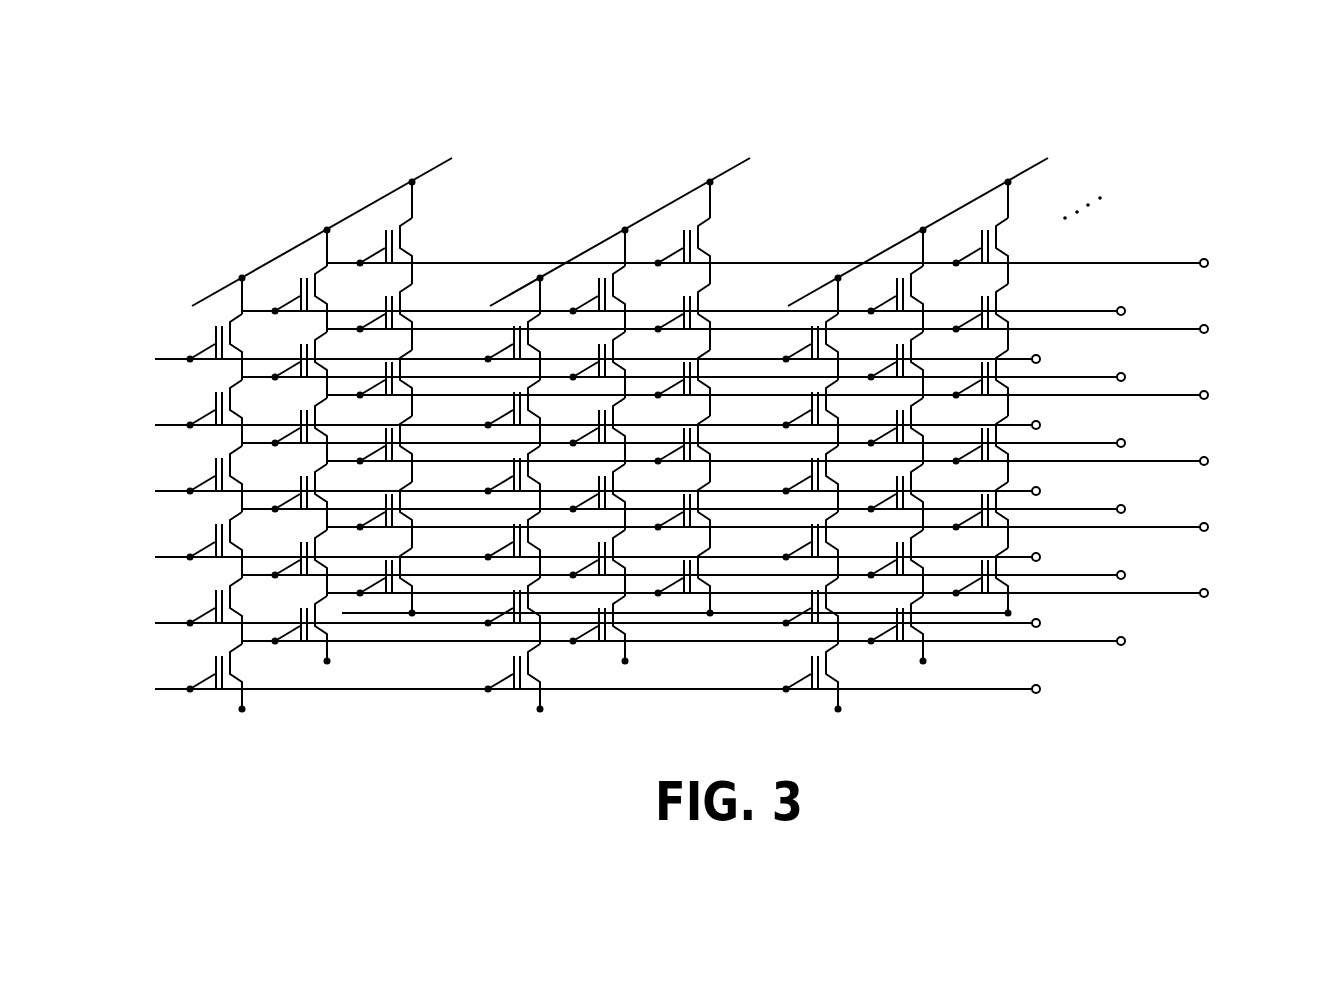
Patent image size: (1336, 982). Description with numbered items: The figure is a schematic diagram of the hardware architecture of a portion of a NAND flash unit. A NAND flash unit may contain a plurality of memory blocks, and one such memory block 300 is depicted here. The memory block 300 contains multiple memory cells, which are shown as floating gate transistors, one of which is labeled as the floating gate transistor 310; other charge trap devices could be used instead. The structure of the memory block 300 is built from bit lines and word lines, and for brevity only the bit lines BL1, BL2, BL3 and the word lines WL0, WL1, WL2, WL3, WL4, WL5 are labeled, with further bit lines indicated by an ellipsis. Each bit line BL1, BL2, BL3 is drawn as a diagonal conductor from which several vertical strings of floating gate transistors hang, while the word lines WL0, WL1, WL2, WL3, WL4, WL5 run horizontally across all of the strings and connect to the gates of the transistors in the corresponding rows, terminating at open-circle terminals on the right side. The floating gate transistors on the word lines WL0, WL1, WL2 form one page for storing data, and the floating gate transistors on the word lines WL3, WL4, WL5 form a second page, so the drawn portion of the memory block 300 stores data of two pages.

The memory block 300 is at (1161, 111).
The floating gate transistor 310 is at (211, 340).
The bit line BL1 is at (433, 168).
The bit line BL2 is at (731, 168).
The bit line BL3 is at (1029, 168).
The word line WL0 is at (1041, 359).
The word line WL1 is at (1126, 311).
The word line WL2 is at (1209, 263).
The word line WL3 is at (1041, 425).
The word line WL4 is at (1126, 377).
The word line WL5 is at (1209, 329).